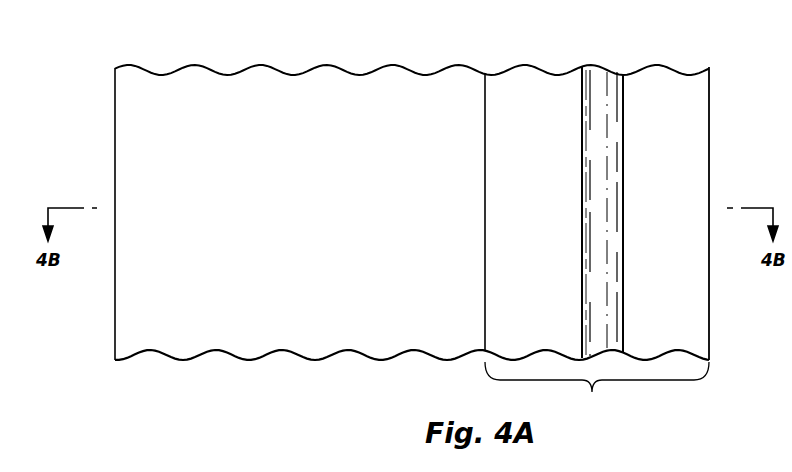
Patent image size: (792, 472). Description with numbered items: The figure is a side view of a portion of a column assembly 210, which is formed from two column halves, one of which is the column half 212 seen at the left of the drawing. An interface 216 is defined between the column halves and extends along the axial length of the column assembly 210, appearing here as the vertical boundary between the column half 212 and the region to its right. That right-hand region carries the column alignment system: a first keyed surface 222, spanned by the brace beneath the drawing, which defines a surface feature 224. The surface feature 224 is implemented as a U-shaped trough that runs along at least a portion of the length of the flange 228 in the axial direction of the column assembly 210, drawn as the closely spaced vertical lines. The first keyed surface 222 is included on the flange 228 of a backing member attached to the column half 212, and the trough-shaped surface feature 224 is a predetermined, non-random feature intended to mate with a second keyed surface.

The absorbent article / garment 210 is at (157, 59).
The first region 212 is at (160, 324).
The boundary line 216 is at (470, 205).
The elasticized region 222 is at (597, 388).
The elastic strand / seam 224 is at (538, 90).
The end region 228 is at (678, 217).